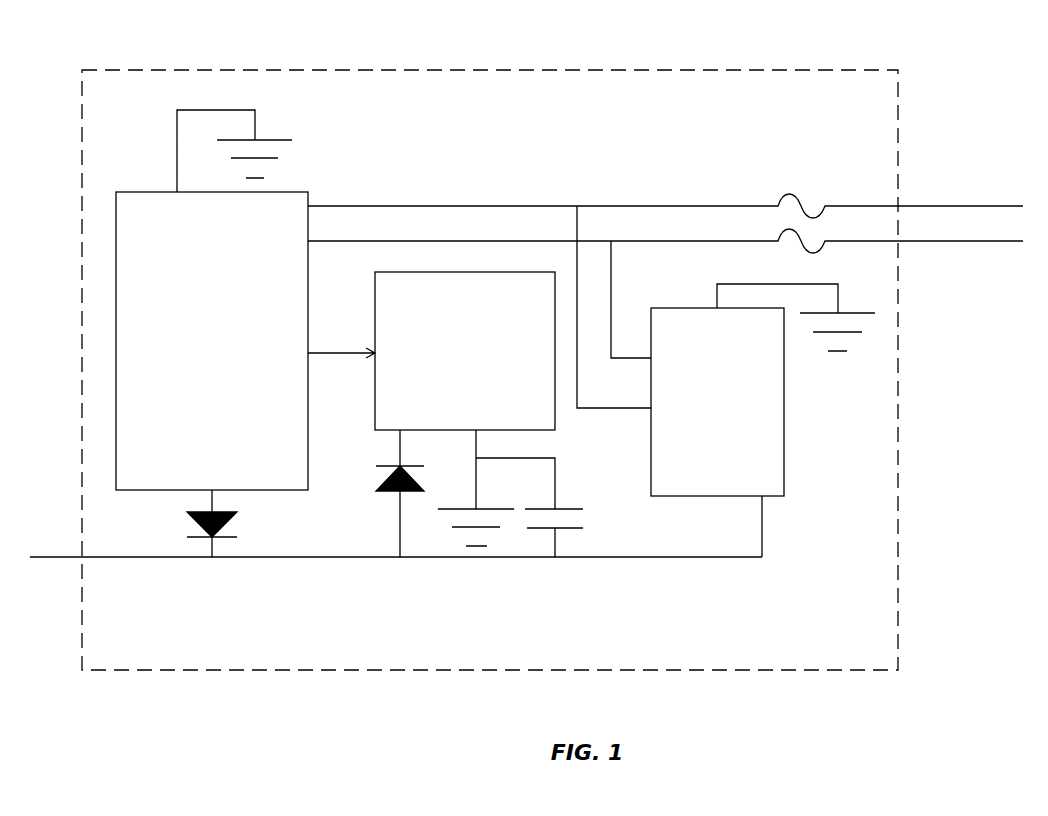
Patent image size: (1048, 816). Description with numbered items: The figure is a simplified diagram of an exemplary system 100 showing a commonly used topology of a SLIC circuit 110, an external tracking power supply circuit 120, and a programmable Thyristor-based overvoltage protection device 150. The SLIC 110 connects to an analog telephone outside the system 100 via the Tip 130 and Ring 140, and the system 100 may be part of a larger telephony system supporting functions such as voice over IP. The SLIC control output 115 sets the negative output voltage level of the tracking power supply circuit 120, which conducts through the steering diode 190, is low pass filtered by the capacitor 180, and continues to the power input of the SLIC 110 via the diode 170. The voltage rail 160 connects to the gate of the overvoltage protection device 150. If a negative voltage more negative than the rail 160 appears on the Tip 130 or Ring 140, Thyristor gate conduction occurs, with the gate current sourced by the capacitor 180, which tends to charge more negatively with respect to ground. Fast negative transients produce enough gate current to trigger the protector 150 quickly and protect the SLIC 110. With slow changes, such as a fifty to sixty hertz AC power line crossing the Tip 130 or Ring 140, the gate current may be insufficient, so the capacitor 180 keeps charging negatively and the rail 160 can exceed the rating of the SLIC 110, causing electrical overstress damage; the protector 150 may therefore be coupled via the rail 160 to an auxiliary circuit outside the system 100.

The system 100 is at (535, 70).
The SLIC circuit 110 is at (212, 300).
The SLIC control output 115 is at (344, 350).
The external tracking power supply circuit 120 is at (465, 409).
The Tip 130 is at (677, 205).
The Ring 140 is at (635, 243).
The Thyristor-based overvoltage protection device 150 is at (763, 420).
The voltage rail 160 is at (690, 560).
The diode 170 is at (240, 522).
The capacitor 180 is at (590, 518).
The steering diode 190 is at (390, 498).